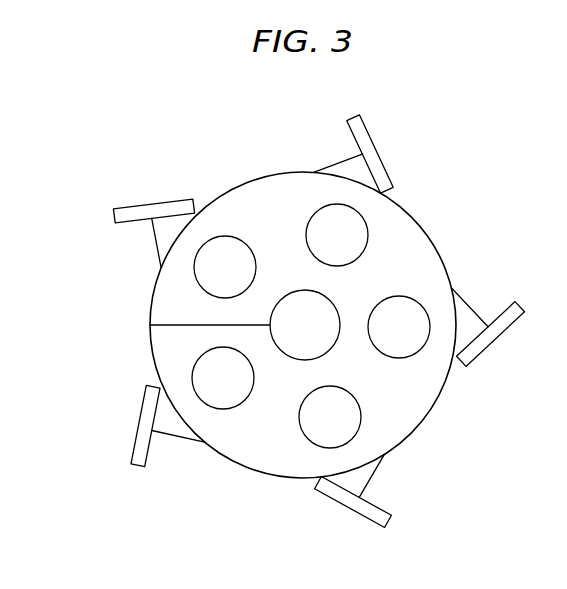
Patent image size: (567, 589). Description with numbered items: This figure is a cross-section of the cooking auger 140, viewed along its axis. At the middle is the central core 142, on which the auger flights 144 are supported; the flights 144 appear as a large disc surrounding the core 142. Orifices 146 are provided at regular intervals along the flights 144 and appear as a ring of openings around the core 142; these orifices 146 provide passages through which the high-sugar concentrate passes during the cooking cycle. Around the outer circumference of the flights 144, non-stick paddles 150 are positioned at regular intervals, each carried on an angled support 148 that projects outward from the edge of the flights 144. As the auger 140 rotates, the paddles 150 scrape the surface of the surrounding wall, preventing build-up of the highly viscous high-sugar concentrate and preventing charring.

The cooking auger 140 is at (112, 288).
The central core 142 is at (327, 338).
The auger flights 144 is at (428, 392).
The orifices 146 is at (340, 417).
The angled supports 148 is at (173, 441).
The non-stick paddles 150 is at (349, 512).